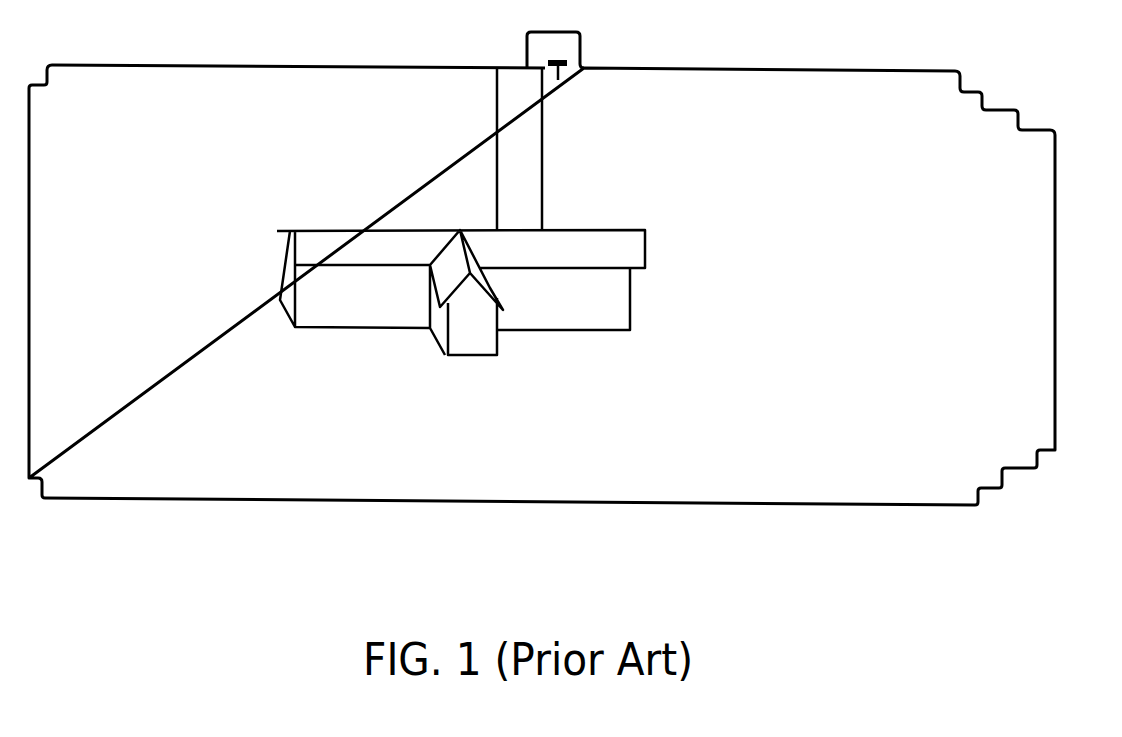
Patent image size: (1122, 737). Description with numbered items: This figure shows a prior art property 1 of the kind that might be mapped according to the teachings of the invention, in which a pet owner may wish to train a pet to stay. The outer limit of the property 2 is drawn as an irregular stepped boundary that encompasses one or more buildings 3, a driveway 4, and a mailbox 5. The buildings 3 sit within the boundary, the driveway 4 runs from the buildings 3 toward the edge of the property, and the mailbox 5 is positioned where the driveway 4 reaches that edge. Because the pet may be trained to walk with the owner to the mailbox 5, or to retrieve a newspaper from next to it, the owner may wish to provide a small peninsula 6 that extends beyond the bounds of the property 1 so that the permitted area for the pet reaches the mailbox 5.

The property 1 is at (1019, 72).
The outer limit of the property 2 is at (1056, 215).
The buildings 3 is at (572, 313).
The driveway 4 is at (510, 157).
The mailbox 5 is at (565, 76).
The peninsula 6 is at (563, 46).